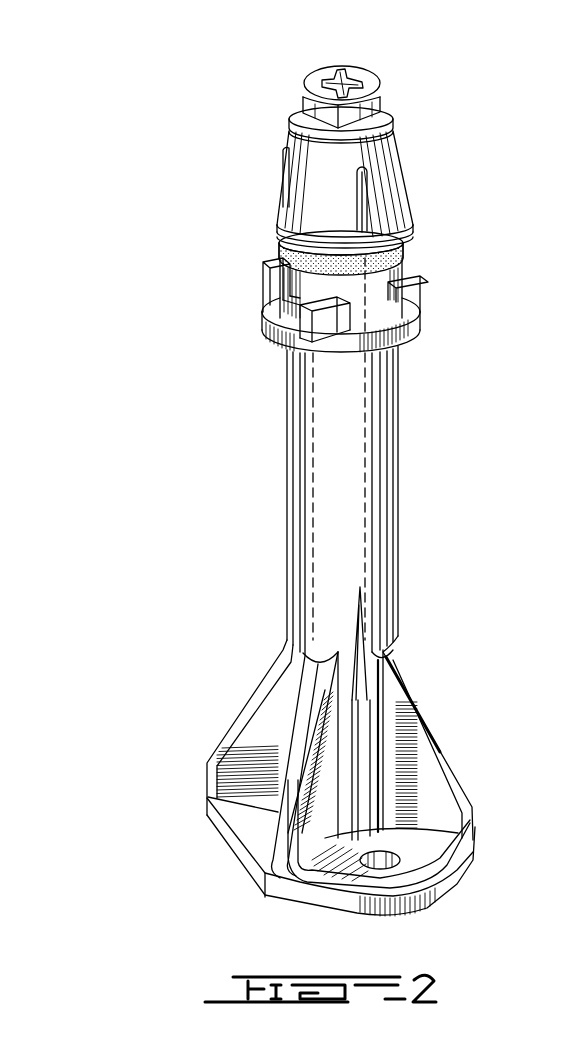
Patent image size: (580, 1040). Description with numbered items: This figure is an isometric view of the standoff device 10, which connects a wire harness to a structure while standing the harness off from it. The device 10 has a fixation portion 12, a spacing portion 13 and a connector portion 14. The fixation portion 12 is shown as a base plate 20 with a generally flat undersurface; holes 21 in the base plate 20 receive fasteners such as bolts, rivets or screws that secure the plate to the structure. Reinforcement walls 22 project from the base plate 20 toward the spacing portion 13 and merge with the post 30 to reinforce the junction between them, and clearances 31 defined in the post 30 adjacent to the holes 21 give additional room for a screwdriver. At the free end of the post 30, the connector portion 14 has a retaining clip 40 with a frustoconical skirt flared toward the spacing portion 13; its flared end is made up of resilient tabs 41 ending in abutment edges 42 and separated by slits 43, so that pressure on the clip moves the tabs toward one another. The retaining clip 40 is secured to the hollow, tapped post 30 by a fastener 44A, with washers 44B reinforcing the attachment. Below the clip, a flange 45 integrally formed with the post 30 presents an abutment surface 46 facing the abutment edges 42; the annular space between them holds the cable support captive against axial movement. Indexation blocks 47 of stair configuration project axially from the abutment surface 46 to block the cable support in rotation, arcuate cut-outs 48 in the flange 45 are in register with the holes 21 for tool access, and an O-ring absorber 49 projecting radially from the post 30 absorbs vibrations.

The standoff device 10 is at (173, 407).
The fixation portion 12 is at (220, 862).
The spacing portion 13 is at (242, 530).
The connector portion 14 is at (223, 158).
The base plate 20 is at (437, 888).
The holes 21 is at (393, 858).
The reinforcement walls 22 is at (307, 738).
The post 30 is at (378, 500).
The clearances 31 is at (362, 684).
The retaining clip 40 is at (420, 143).
The resilient tabs 41 is at (270, 182).
The abutment edges 42 is at (283, 238).
The slits 43 is at (296, 158).
The fastener 44A is at (372, 80).
The washers 44B is at (380, 110).
The flange 45 is at (413, 327).
The abutment surface 46 is at (270, 297).
The indexation blocks 47 is at (418, 298).
The cut-outs 48 is at (373, 335).
The absorber 49 is at (290, 303).